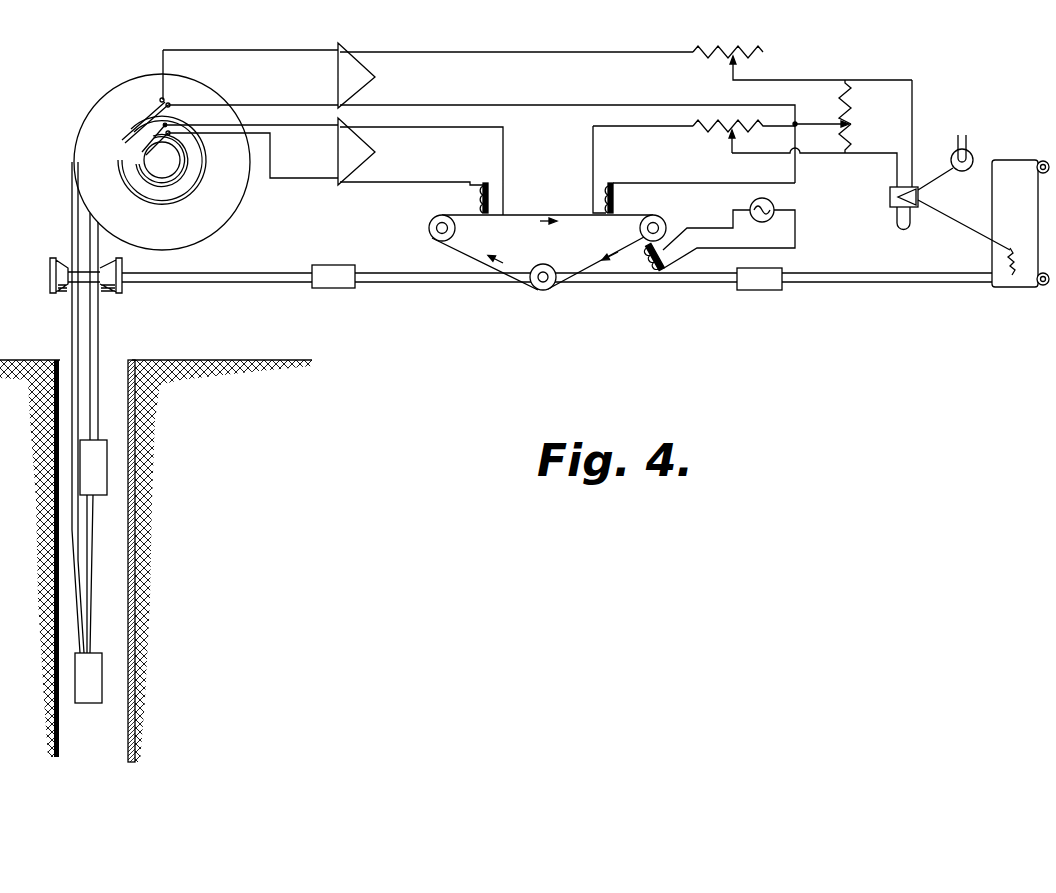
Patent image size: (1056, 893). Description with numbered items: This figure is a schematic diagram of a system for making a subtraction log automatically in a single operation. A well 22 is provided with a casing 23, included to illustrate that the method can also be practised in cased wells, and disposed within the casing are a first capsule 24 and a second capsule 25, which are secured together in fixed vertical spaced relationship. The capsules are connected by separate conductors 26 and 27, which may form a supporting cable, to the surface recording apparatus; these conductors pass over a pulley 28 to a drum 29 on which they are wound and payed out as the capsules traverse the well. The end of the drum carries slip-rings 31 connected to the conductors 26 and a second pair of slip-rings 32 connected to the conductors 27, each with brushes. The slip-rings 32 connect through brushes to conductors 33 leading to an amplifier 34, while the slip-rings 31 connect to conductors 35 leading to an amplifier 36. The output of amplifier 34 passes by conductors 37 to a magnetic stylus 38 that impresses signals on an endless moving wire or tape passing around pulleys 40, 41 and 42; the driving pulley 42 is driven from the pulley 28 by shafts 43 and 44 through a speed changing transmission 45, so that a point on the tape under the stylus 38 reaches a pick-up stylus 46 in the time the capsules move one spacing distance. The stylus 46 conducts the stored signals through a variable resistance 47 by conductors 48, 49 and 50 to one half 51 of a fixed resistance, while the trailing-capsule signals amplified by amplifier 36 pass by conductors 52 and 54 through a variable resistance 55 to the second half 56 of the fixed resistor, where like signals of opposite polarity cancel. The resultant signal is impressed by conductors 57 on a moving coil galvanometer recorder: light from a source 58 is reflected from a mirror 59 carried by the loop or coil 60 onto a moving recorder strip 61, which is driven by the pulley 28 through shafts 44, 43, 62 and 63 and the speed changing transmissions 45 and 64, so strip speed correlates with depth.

The well 22 is at (95, 723).
The casing 23 is at (132, 546).
The first capsule 24 is at (100, 462).
The second capsule 25 is at (95, 669).
The conductors 26 is at (100, 340).
The conductors 27 is at (70, 334).
The pulley 28 is at (124, 289).
The drum 29 is at (90, 112).
The slip-rings 31 is at (196, 186).
The slip-rings 32 is at (142, 168).
The conductors 33 is at (306, 178).
The amplifier 34 is at (345, 183).
The conductors 35 is at (262, 105).
The amplifier 36 is at (366, 50).
The conductors 37 is at (432, 182).
The magnetic stylus 38 is at (490, 184).
The pulley 40 is at (432, 218).
The pulley 41 is at (661, 217).
The driving pulley 42 is at (536, 290).
The shaft 43 is at (445, 283).
The shaft 44 is at (248, 283).
The speed changing transmission 45 is at (343, 289).
The pick-up stylus 46 is at (611, 182).
The variable resistance 47 is at (752, 128).
The conductor 48 is at (635, 126).
The conductor 49 is at (762, 153).
The conductor 50 is at (740, 183).
The half of fixed resistance 51 is at (852, 146).
The conductor 52 is at (540, 52).
The conductor 54 is at (538, 105).
The variable resistance 55 is at (744, 52).
The second half of fixed resistor 56 is at (852, 112).
The conductors 57 is at (912, 130).
The light source 58 is at (974, 150).
The mirror 59 is at (890, 198).
The loop or coil 60 is at (893, 222).
The recorder strip 61 is at (990, 268).
The shaft 62 is at (654, 283).
The shaft 63 is at (862, 283).
The speed changing transmission 64 is at (755, 290).